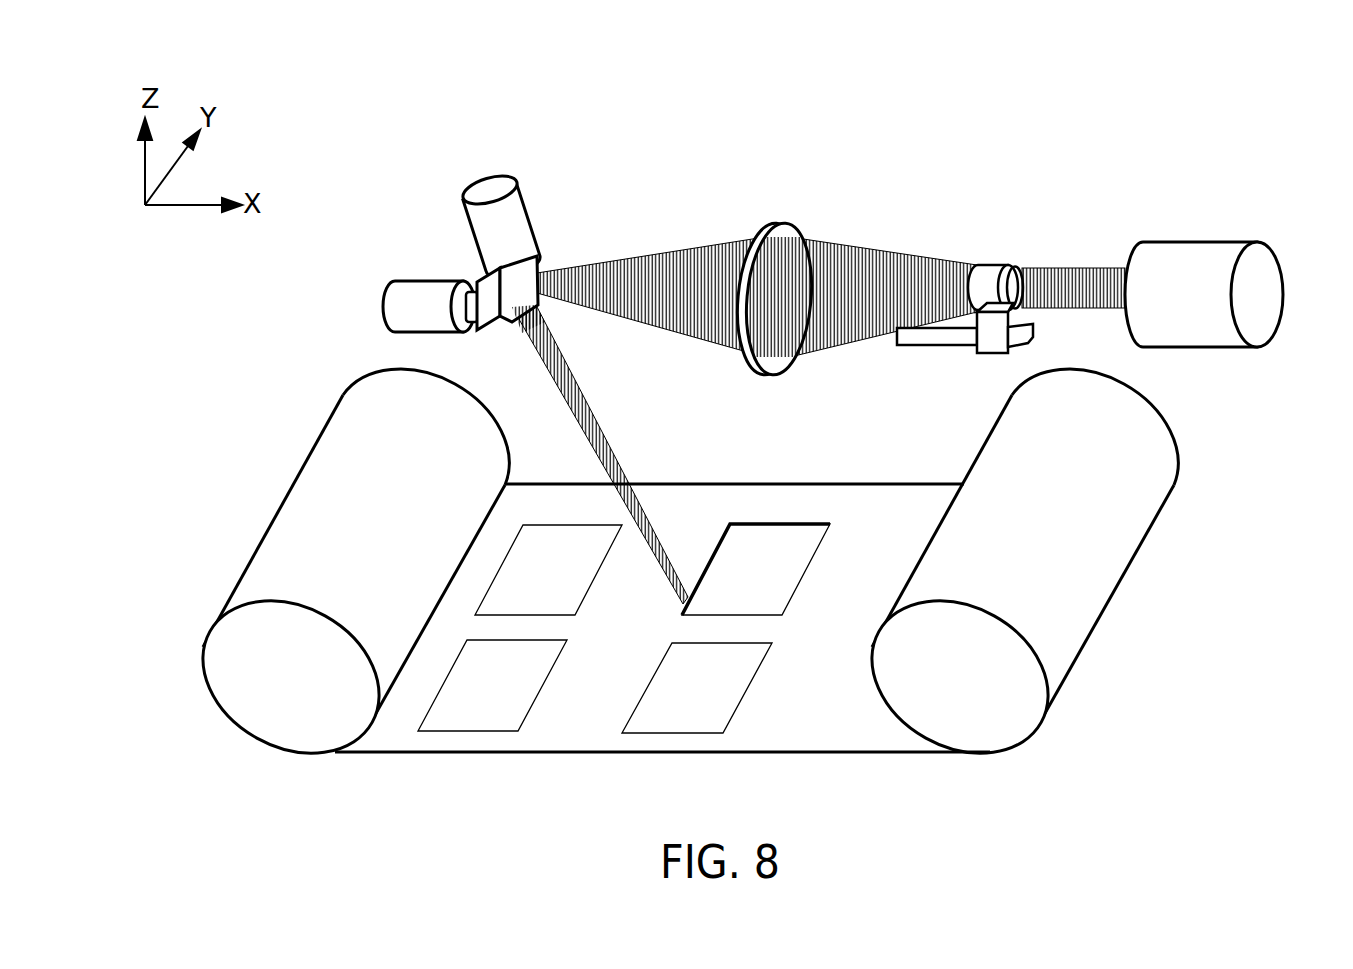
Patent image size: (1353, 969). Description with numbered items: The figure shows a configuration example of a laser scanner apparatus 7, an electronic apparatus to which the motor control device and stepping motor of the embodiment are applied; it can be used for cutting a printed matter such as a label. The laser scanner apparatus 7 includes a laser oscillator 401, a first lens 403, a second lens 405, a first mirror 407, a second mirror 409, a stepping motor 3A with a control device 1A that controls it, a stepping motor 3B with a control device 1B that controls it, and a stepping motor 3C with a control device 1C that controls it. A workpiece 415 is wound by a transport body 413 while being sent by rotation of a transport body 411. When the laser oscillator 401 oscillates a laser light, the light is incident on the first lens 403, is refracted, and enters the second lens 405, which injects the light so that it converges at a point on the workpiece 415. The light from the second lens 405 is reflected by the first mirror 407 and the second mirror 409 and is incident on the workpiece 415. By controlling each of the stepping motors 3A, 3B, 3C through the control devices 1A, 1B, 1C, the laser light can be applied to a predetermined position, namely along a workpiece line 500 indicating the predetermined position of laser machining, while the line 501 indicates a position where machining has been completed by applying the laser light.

The laser scanner apparatus 7 is at (1226, 113).
The control device 1A is at (965, 368).
The stepping motor 3A is at (948, 397).
The control device 1B is at (516, 202).
The stepping motor 3B is at (516, 219).
The control device 1C is at (410, 268).
The stepping motor 3C is at (385, 239).
The laser oscillator 401 is at (1206, 240).
The first lens 403 is at (994, 264).
The second lens 405 is at (768, 228).
The first mirror 407 is at (530, 272).
The second mirror 409 is at (490, 334).
The transport body 411 is at (308, 504).
The transport body 413 is at (1082, 398).
The workpiece 415 is at (847, 494).
The workpiece line 500 is at (635, 581).
The line indicating completed machining 501 is at (737, 517).